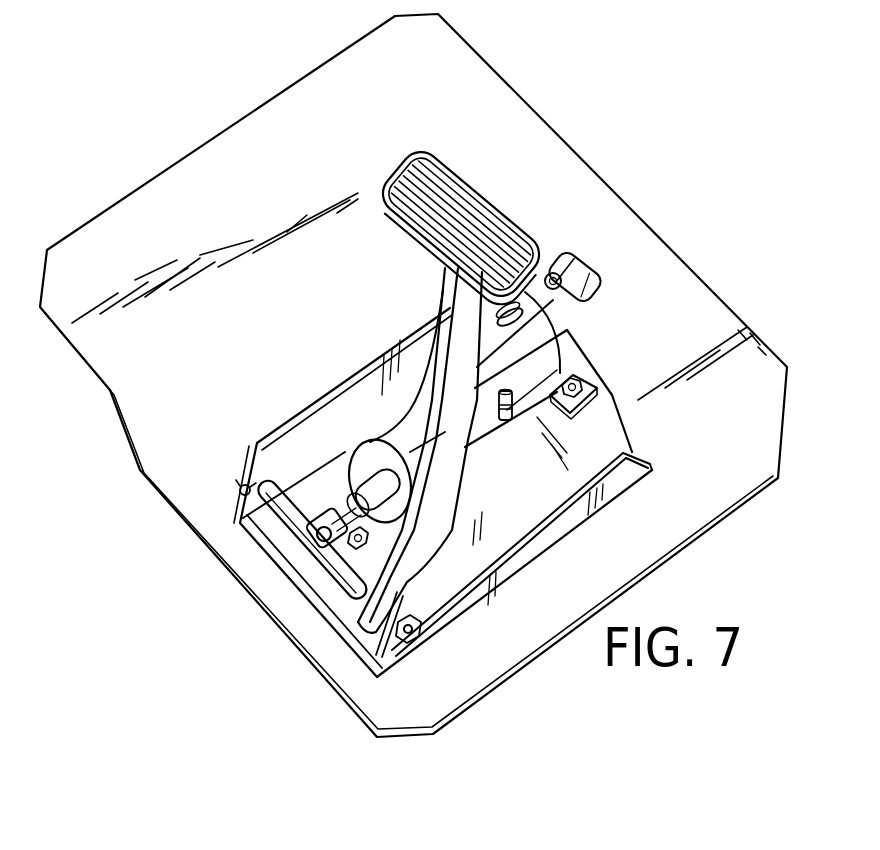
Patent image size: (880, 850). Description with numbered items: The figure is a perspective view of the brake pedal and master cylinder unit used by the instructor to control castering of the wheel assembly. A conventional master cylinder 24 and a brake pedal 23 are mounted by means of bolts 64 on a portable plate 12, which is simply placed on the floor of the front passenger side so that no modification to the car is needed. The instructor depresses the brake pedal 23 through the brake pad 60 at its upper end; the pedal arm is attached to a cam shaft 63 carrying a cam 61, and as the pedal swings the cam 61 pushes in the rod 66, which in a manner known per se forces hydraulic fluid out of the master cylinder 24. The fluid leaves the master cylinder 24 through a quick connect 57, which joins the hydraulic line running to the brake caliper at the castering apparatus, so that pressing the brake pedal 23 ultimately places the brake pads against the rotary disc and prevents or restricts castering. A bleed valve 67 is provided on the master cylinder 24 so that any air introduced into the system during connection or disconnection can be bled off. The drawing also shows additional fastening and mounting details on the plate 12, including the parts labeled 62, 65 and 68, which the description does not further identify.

The portable plate 12 is at (262, 223).
The brake pedal 23 is at (420, 553).
The master cylinder 24 is at (548, 356).
The quick connect 57 is at (594, 266).
The brake pad 60 is at (408, 143).
The cam 61 is at (304, 510).
The bolt 62 is at (241, 486).
The cam shaft 63 is at (357, 540).
The bolts 64 is at (573, 378).
The lip end 65 is at (625, 468).
The rod 66 is at (328, 515).
The bleed valve 67 is at (504, 421).
The nut 68 is at (555, 267).